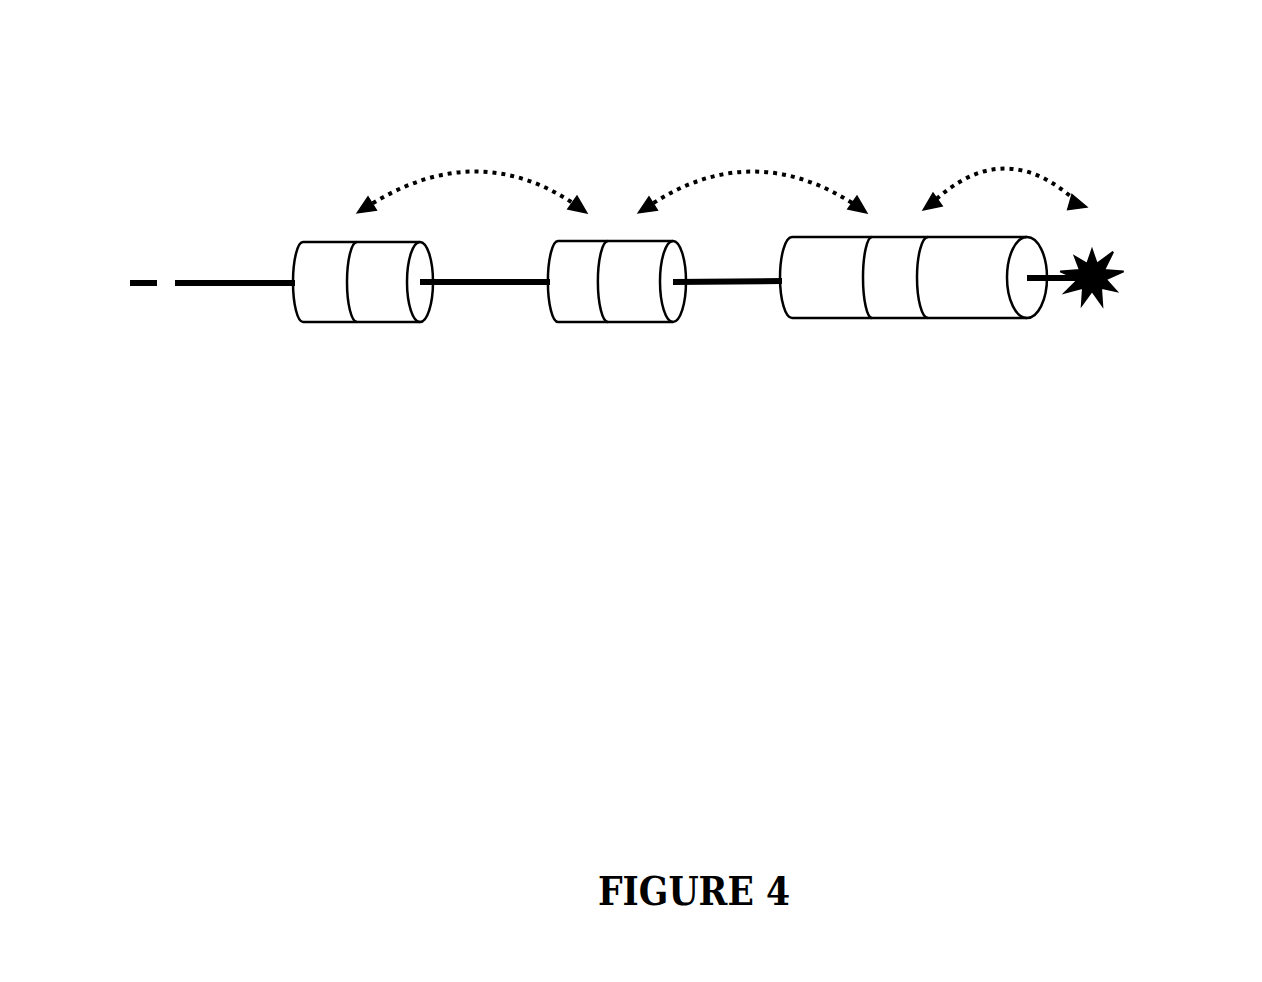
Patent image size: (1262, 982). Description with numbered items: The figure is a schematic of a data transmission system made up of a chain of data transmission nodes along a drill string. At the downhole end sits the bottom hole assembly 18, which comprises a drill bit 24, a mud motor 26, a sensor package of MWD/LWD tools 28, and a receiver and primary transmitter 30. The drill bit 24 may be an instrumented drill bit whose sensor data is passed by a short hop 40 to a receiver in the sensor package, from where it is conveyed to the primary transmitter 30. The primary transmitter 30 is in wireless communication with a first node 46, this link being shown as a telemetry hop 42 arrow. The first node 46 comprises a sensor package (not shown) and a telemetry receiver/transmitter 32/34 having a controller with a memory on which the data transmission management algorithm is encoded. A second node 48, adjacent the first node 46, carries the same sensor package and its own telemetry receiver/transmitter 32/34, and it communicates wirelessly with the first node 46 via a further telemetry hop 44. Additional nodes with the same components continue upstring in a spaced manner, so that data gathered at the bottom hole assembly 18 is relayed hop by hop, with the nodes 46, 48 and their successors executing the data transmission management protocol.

The bottom hole assembly 18 is at (892, 181).
The drill bit 24 is at (1140, 309).
The mud motor 26 is at (979, 352).
The MWD/LWD tools 28 is at (902, 352).
The primary transmitter 30 is at (834, 352).
The telemetry receiver 32 is at (323, 355).
The telemetry transmitter 34 is at (384, 369).
The short hop 40 is at (1005, 170).
The telemetry hop 42 is at (752, 172).
The telemetry hop 44 is at (472, 172).
The first node 46 is at (599, 183).
The second node 48 is at (282, 198).